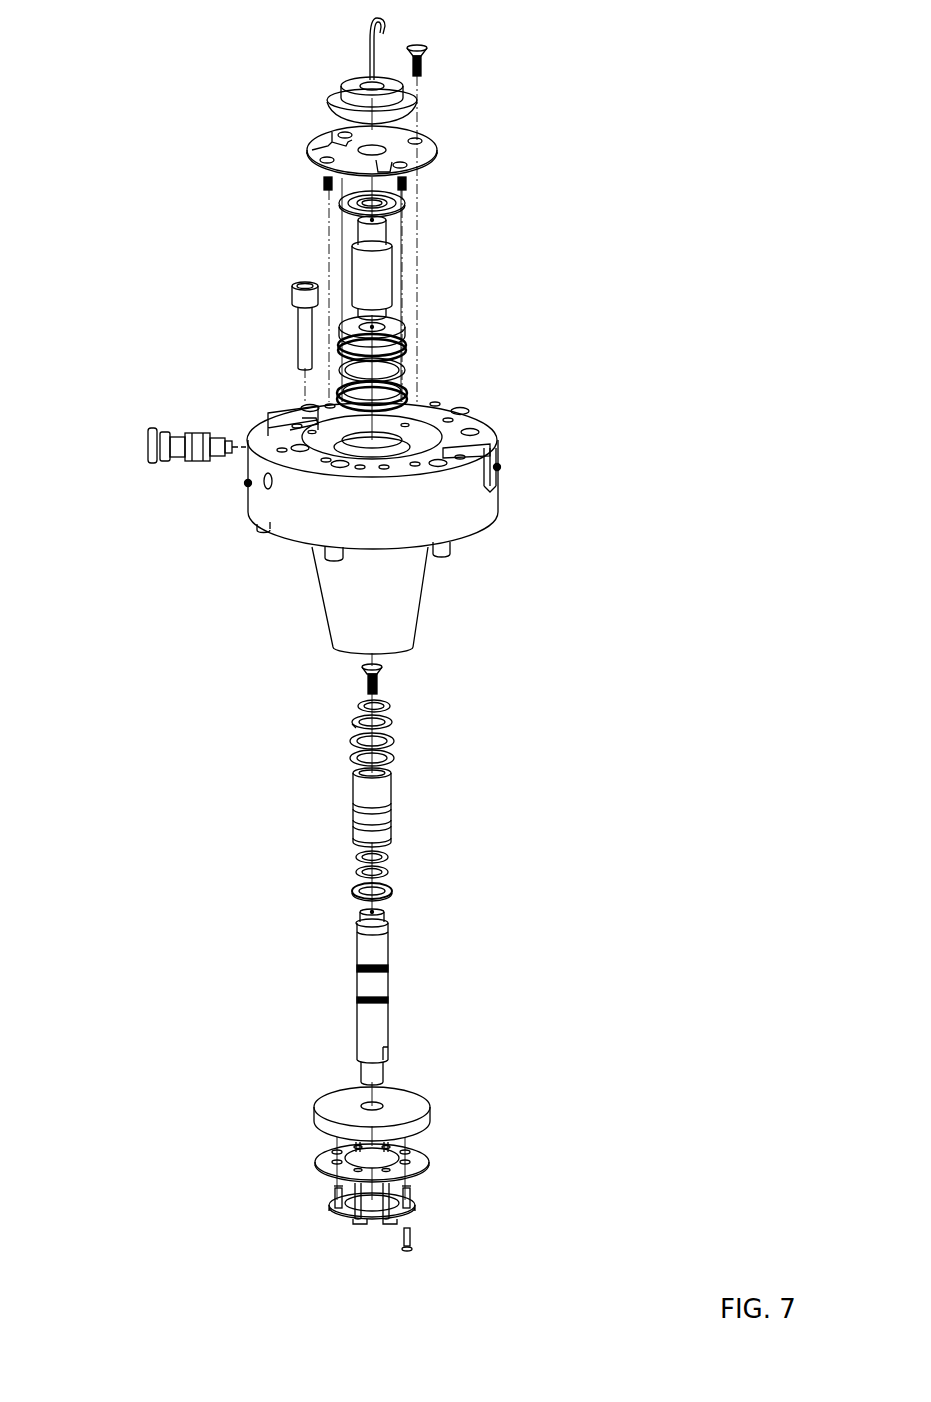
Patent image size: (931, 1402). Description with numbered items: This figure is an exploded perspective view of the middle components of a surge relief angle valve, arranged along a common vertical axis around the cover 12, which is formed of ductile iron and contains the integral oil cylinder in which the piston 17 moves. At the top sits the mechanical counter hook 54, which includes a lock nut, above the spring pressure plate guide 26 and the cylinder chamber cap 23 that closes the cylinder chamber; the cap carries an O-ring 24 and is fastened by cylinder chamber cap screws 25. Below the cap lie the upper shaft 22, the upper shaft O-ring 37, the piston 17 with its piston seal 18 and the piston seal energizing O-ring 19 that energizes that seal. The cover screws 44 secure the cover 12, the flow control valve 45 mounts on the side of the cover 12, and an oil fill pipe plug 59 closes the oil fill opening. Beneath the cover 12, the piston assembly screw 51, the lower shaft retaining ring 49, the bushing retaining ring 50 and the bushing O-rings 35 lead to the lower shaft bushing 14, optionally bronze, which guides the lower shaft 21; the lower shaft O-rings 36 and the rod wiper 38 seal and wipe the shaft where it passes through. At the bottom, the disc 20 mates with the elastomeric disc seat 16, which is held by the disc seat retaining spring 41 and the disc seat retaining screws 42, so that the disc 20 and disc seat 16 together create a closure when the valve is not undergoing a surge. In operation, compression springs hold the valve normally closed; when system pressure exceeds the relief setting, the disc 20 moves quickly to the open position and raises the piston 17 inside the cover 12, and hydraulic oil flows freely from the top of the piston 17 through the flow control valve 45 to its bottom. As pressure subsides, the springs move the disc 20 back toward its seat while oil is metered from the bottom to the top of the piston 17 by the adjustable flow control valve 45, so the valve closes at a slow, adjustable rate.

The cover 12 is at (478, 508).
The lower shaft bushing 14 is at (382, 795).
The disc seat 16 is at (417, 1157).
The piston 17 is at (398, 327).
The piston seal 18 is at (413, 402).
The piston seal energizing O-ring 19 is at (407, 373).
The disc 20 is at (420, 1100).
The lower shaft 21 is at (382, 950).
The upper shaft 22 is at (380, 287).
The cylinder chamber cap 23 is at (425, 152).
The O-ring 24 is at (403, 207).
The cylinder chamber cap screws 25 is at (418, 70).
The spring pressure plate guide 26 is at (340, 90).
The bushing O-ring 35 is at (353, 742).
The lower shaft O-ring 36 is at (392, 872).
The upper shaft O-ring 37 is at (398, 203).
The rod wiper 38 is at (393, 892).
The disc seat retaining spring 41 is at (343, 1218).
The disc seat retaining screws 42 is at (410, 1241).
The cover screws 44 is at (303, 343).
The flow control valve 45 is at (190, 462).
The lower shaft retaining ring 49 is at (360, 708).
The bushing retaining ring 50 is at (393, 723).
The piston assembly screw 51 is at (380, 683).
The mechanical counter hook 54 is at (372, 54).
The oil fill pipe plugs 59 is at (497, 467).